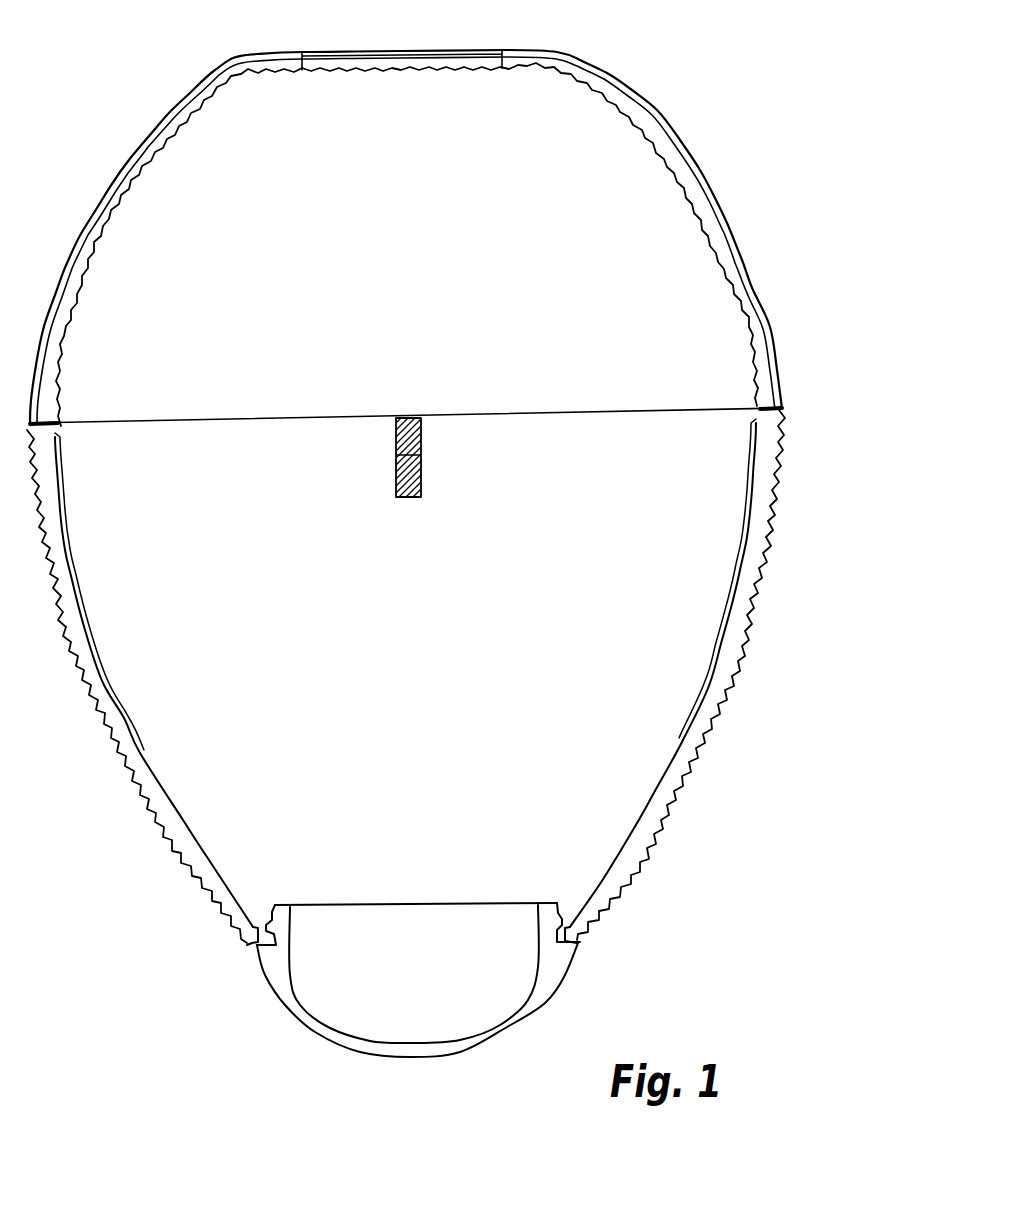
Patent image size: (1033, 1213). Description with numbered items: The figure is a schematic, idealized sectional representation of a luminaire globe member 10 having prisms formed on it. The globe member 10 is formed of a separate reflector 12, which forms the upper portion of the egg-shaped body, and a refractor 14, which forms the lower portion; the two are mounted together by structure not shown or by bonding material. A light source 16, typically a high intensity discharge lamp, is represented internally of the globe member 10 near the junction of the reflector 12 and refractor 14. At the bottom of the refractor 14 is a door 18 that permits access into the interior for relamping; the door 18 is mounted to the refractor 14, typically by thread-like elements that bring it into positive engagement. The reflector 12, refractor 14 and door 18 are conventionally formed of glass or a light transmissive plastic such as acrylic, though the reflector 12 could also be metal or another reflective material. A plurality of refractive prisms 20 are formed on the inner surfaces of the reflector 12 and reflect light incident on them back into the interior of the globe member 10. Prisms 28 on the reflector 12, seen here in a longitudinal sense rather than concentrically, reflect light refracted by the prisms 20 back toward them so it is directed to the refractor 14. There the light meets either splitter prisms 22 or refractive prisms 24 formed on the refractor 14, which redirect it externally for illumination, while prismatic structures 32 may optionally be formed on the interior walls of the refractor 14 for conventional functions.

The globe member 10 is at (429, 553).
The reflector 12 is at (428, 237).
The refractor 14 is at (429, 677).
The light source 16 is at (394, 457).
The door 18 is at (555, 1006).
The refractive prisms 20 is at (188, 132).
The splitter prisms 22 is at (791, 462).
The refractive prisms 24 is at (746, 661).
The prisms 28 is at (122, 151).
The prismatic structures 32 is at (138, 700).